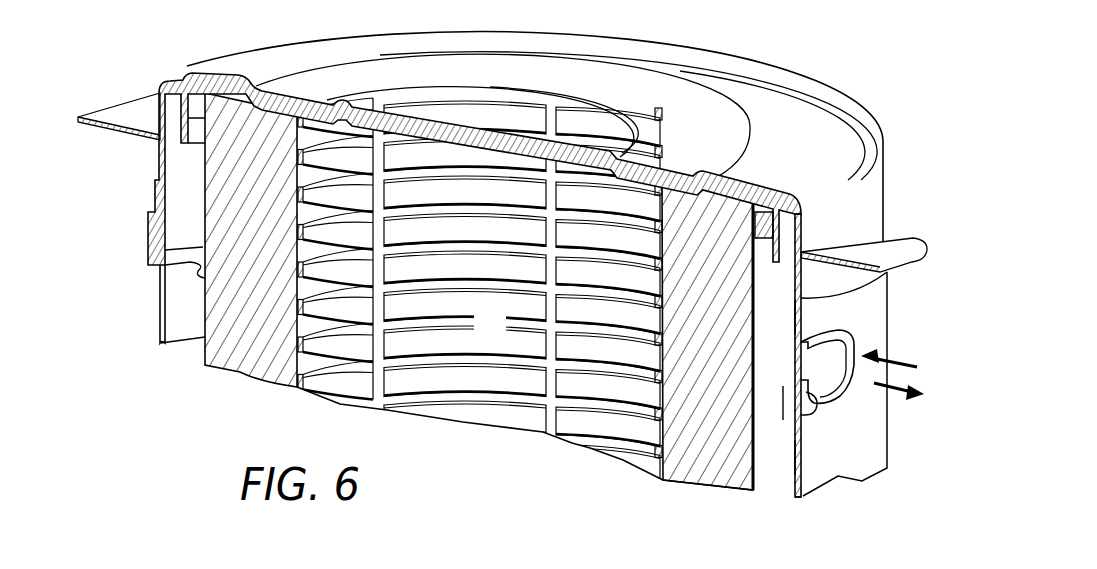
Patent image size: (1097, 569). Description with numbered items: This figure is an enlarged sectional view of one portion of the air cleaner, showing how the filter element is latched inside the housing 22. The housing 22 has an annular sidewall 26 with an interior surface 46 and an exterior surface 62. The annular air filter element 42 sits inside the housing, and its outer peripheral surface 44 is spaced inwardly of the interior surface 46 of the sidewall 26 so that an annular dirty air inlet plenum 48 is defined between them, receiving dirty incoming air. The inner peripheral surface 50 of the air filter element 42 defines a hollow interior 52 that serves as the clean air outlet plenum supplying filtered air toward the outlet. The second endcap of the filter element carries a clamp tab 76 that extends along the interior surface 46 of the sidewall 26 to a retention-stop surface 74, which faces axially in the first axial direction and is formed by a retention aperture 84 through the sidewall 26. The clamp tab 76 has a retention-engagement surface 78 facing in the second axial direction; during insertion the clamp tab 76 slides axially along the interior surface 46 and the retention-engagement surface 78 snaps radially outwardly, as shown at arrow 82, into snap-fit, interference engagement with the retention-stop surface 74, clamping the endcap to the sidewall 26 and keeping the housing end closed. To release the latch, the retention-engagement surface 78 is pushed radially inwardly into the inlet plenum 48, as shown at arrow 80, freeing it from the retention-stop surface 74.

The housing 22 is at (895, 466).
The annular sidewall 26 is at (801, 490).
The annular air filter element 42 is at (687, 480).
The outer peripheral surface 44 is at (757, 490).
The interior surface 46 is at (800, 488).
The annular dirty air inlet plenum 48 is at (777, 470).
The inner peripheral surface 50 is at (650, 470).
The hollow interior 52 is at (546, 317).
The exterior surface 62 is at (803, 468).
The retention-stop surface 74 is at (802, 342).
The clamp tab 76 is at (798, 320).
The retention-engagement surface 78 is at (808, 340).
The arrow 80 is at (902, 358).
The arrow 82 is at (903, 388).
The retention aperture 84 is at (790, 384).